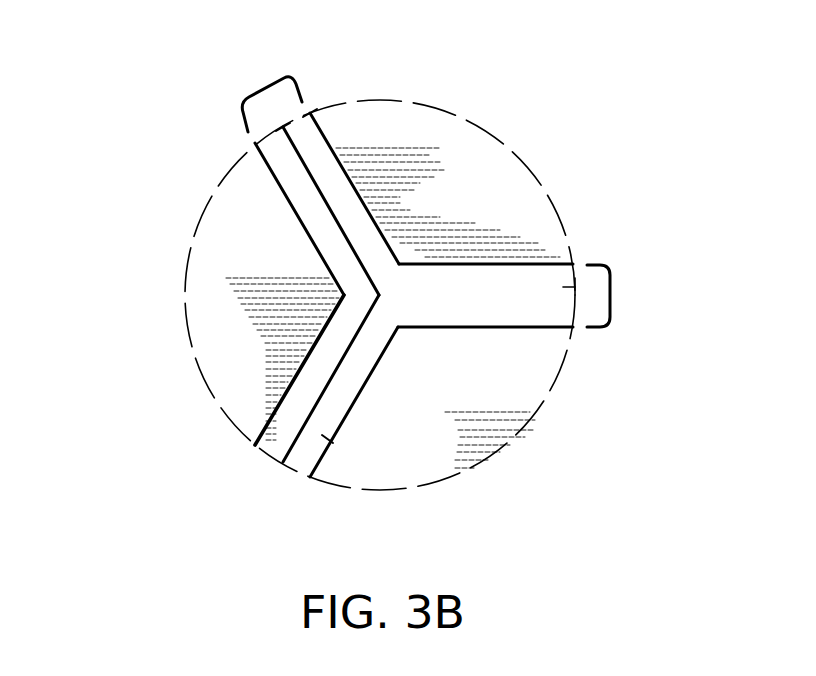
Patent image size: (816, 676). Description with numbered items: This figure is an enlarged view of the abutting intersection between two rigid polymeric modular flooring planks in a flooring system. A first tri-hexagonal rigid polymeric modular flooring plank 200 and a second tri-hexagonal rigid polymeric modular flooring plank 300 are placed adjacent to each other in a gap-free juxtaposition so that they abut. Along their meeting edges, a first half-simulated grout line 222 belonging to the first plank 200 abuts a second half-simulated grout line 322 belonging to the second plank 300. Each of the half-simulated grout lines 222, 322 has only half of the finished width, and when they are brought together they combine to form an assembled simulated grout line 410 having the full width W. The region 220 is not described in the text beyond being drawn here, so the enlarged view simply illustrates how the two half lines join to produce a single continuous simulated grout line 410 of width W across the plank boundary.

The first tri-hexagonal rigid polymeric modular flooring plank 200 is at (425, 138).
The channel region 220 is at (458, 292).
The first half-simulated grout line 222 is at (328, 442).
The second tri-hexagonal rigid polymeric modular flooring plank 300 is at (228, 293).
The second half-simulated grout line 322 is at (282, 413).
The assembled simulated grout line 410 is at (257, 92).
The full width W is at (611, 296).